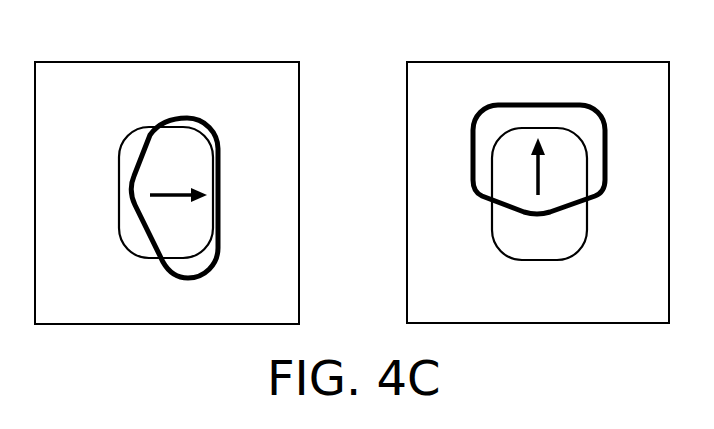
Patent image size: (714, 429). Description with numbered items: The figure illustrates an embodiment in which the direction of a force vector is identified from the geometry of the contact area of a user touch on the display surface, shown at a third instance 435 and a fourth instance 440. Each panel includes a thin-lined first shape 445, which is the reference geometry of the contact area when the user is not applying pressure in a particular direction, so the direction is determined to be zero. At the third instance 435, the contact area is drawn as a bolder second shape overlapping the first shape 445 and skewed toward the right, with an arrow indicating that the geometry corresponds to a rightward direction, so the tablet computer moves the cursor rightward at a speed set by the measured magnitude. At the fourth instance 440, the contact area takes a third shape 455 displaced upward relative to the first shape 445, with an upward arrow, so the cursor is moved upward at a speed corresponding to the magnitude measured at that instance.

The third instance 435 is at (290, 315).
The fourth instance 440 is at (664, 313).
The first shape 445 is at (106, 175).
The third shape 455 is at (647, 125).